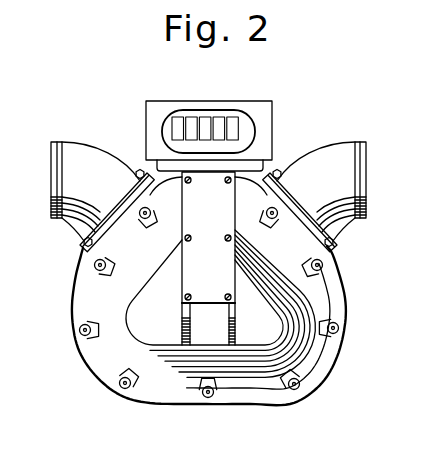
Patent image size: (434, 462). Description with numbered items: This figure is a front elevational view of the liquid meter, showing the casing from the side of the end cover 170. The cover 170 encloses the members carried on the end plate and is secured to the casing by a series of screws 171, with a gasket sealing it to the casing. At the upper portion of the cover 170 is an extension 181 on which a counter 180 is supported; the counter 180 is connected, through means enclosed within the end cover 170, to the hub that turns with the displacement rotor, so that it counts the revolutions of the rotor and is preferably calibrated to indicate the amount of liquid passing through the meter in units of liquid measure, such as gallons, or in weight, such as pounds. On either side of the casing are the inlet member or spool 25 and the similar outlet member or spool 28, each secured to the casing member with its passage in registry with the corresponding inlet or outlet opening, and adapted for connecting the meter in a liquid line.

The inlet member or spool 25 is at (73, 220).
The outlet member or spool 28 is at (346, 226).
The cover 170 is at (153, 388).
The screws 171 is at (294, 391).
The counter 180 is at (277, 112).
The extension 181 is at (150, 160).